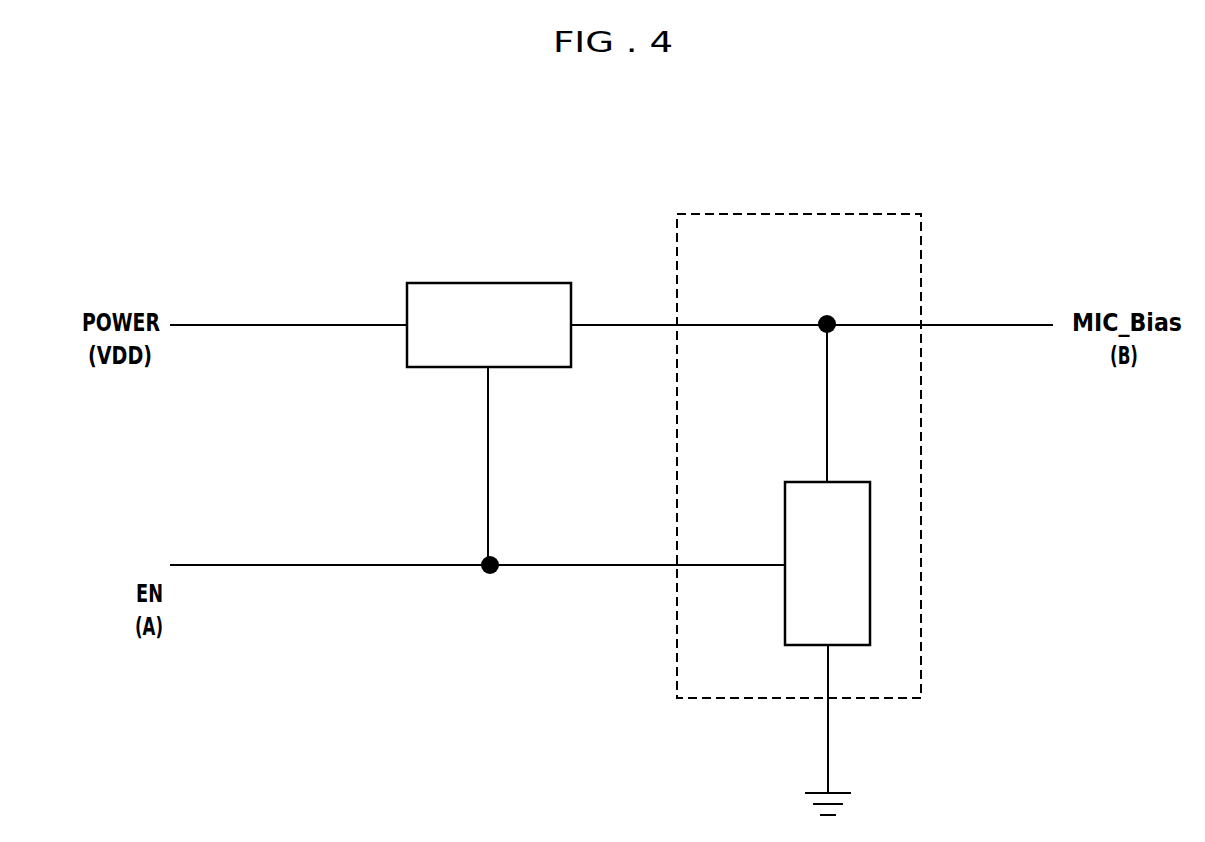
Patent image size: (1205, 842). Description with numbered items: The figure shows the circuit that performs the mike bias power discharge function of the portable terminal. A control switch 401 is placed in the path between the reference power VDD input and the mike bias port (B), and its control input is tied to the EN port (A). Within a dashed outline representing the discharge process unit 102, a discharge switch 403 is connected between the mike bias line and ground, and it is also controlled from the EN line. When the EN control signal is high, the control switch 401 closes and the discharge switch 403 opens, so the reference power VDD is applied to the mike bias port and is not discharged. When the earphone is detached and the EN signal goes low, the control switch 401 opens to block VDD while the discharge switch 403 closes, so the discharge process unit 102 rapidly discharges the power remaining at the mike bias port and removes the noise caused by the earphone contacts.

The control switch 401 is at (532, 283).
The discharge process unit 102 is at (902, 228).
The discharge switch 403 is at (870, 583).